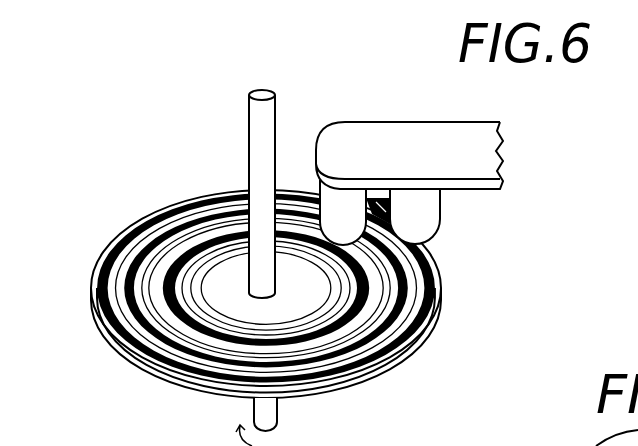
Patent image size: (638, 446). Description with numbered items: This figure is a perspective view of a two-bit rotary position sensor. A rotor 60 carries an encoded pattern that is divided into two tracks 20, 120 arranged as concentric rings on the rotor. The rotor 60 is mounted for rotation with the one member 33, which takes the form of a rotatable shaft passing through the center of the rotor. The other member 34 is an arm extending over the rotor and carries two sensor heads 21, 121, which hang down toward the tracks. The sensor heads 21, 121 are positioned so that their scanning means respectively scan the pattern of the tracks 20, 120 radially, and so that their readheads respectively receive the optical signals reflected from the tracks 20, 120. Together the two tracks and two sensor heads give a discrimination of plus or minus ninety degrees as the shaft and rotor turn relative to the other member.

The track 20 is at (177, 240).
The sensor head 21 is at (437, 273).
The one member 33 is at (260, 152).
The other member 34 is at (400, 138).
The rotor 60 is at (372, 373).
The track 120 is at (107, 282).
The sensor head 121 is at (365, 226).